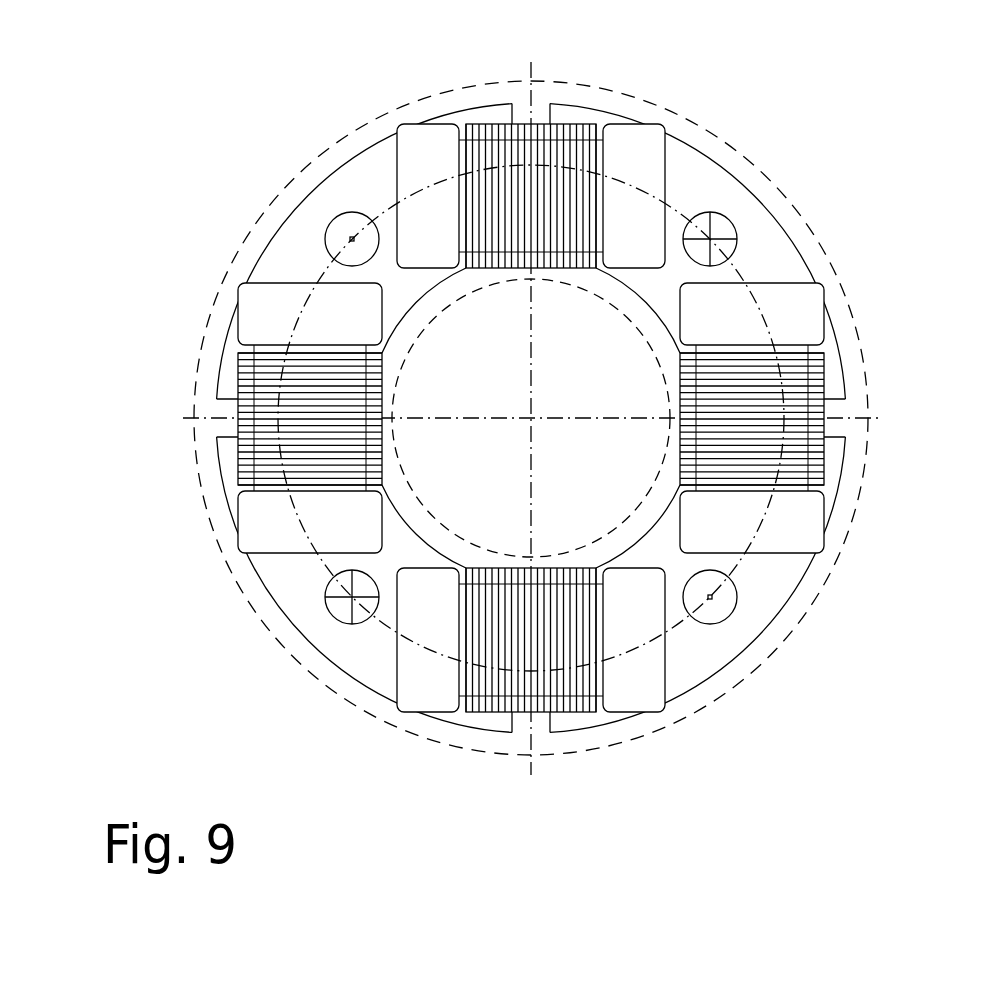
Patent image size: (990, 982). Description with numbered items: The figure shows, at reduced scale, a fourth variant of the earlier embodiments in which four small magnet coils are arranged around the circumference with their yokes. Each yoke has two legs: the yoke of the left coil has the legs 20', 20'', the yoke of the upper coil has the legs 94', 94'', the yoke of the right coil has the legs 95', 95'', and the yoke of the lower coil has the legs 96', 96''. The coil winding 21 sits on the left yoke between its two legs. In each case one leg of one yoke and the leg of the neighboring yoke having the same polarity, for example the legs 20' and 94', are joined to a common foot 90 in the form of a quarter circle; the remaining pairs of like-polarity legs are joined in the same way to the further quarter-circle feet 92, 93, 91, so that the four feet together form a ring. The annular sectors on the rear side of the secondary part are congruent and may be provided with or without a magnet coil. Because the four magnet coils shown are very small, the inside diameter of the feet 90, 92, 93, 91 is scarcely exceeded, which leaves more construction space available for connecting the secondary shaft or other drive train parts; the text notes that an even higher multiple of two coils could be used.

The leg of yoke 20' is at (242, 222).
The leg of yoke 20'' is at (241, 494).
The coil winding 21 is at (310, 363).
The common foot 90 is at (365, 187).
The foot 91 is at (303, 617).
The foot 92 is at (757, 237).
The foot 93 is at (757, 597).
The leg of yoke 94' is at (428, 146).
The leg of yoke 94'' is at (671, 146).
The leg of yoke 95' is at (822, 507).
The leg of yoke 95'' is at (827, 293).
The leg of yoke 96' is at (788, 640).
The leg of yoke 96'' is at (585, 704).